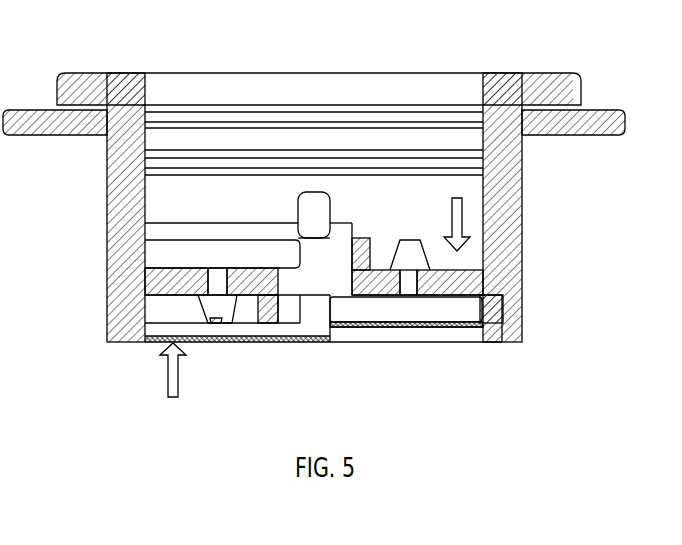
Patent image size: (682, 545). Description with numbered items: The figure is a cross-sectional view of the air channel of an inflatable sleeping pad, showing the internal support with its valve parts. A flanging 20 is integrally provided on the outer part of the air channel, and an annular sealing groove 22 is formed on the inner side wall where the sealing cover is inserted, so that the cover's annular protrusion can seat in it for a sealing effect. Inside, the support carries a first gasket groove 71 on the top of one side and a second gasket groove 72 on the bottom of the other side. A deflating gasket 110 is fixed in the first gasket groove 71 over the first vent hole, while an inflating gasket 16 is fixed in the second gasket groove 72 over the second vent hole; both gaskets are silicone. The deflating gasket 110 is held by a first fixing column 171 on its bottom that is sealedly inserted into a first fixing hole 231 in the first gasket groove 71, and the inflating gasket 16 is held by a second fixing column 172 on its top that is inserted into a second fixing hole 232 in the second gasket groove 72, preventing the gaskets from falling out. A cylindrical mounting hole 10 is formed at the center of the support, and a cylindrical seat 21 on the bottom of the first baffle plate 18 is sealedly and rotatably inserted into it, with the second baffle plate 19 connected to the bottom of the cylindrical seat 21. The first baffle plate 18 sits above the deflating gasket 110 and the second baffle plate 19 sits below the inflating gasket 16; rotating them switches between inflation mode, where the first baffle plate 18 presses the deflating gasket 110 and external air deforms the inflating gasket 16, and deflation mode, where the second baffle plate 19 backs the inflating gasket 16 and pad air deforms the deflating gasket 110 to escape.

The cylindrical mounting hole 10 is at (357, 295).
The inflating gasket 16 is at (432, 323).
The first baffle plate 18 is at (157, 231).
The second baffle plate 19 is at (130, 334).
The flanging 20 is at (600, 118).
The cylindrical seat 21 is at (353, 229).
The annular sealing groove 22 is at (345, 108).
The first gasket groove 71 is at (200, 273).
The second gasket groove 72 is at (486, 306).
The deflating gasket 110 is at (233, 241).
The first fixing column 171 is at (222, 323).
The second fixing column 172 is at (413, 250).
The first fixing hole 231 is at (208, 290).
The second fixing hole 232 is at (420, 275).